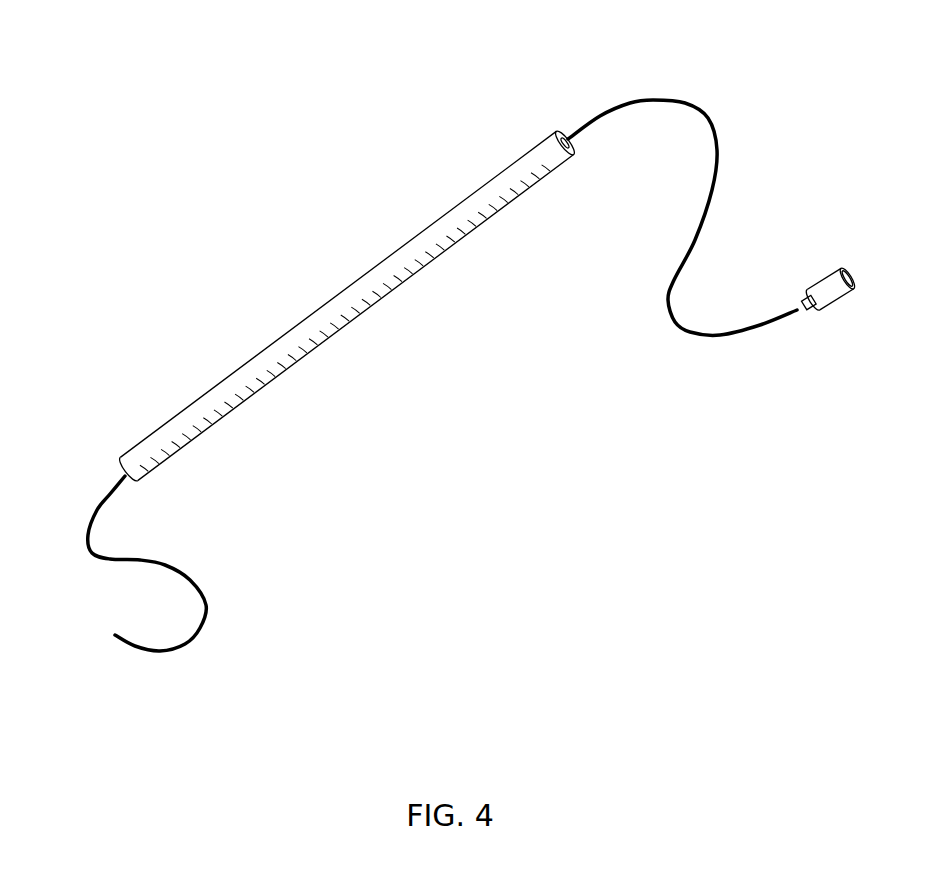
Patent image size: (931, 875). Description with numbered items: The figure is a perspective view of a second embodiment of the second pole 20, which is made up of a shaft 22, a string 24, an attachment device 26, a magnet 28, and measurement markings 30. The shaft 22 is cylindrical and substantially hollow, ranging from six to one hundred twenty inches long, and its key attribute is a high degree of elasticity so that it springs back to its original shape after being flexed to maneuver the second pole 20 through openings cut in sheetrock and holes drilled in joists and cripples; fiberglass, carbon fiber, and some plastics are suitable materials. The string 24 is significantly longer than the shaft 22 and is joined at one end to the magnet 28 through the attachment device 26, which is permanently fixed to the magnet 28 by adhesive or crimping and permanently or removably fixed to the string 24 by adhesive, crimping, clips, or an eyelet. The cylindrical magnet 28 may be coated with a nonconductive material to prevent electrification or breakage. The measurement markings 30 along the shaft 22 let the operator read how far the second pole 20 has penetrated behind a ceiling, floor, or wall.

The second pole 20 is at (127, 108).
The shaft 22 is at (313, 305).
The string 24 is at (630, 100).
The attachment device 26 is at (802, 293).
The magnet 28 is at (847, 307).
The measurement markings 30 is at (428, 263).